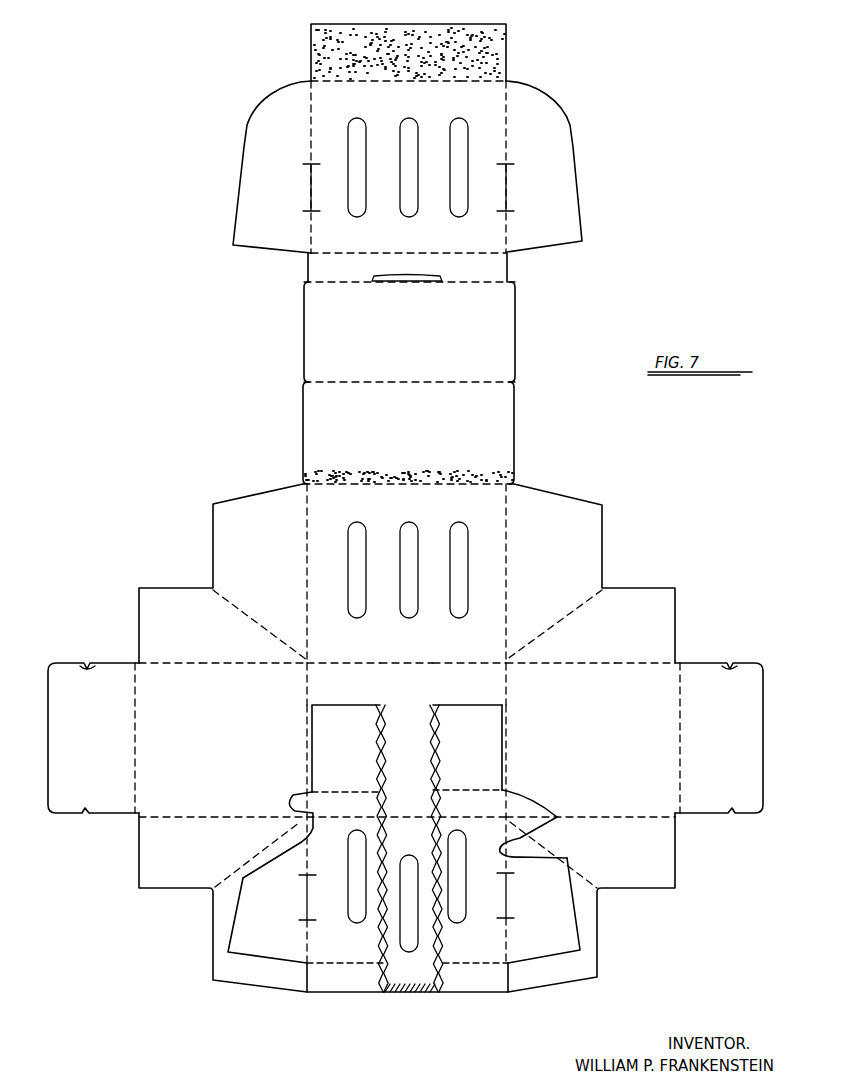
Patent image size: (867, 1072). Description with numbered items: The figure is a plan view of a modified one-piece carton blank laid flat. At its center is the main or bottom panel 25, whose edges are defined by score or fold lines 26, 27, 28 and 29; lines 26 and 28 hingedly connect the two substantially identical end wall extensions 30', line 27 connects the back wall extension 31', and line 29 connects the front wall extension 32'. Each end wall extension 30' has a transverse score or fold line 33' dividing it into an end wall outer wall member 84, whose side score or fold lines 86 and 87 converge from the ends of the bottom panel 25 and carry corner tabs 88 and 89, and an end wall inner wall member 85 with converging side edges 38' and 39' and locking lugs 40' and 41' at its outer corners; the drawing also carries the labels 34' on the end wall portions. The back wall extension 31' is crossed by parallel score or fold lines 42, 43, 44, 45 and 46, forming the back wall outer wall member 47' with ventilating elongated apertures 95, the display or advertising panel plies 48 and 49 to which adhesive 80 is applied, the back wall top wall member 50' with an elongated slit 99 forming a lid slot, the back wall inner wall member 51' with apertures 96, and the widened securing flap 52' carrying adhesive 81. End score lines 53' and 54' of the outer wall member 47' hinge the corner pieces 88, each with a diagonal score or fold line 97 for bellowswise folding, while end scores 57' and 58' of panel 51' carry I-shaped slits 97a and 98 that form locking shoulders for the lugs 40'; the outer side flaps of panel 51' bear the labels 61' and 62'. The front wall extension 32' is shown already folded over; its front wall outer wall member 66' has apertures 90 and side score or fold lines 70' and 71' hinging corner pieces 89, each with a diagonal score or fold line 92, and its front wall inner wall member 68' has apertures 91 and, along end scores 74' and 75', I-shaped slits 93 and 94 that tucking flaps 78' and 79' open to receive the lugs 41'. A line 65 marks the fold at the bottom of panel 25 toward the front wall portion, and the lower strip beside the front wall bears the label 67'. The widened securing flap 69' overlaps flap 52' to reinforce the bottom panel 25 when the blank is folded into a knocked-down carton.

The adhesive 81 is at (318, 43).
The back wall inner wall member securing flap 52' is at (427, 52).
The back wall inner wall member 51' is at (502, 73).
The score or fold line 46 is at (380, 83).
The end score line 57' is at (330, 167).
The end score line 58' is at (523, 167).
The elongated apertures 96 is at (409, 216).
The I-shaped slit 97a is at (311, 200).
The I-shaped slit 98 is at (505, 194).
The score or fold line 45 is at (382, 251).
The end flap 62' is at (560, 166).
The end flap 61' is at (272, 178).
The back wall top wall member 50' is at (429, 267).
The elongated slit 99 is at (429, 277).
The score or fold line 44 is at (350, 283).
The score or fold line 43 is at (468, 380).
The display or advertising panel ply 49 is at (408, 383).
The display or advertising panel ply 48 is at (513, 432).
The adhesive 80 is at (397, 470).
The score or fold line 42 is at (400, 486).
The elongated apertures 95 is at (357, 526).
The end score or fold line 53' is at (325, 573).
The end score or fold line 54' is at (525, 573).
The back wall outer wall member 47' is at (425, 617).
The corner pieces 88 is at (213, 548).
The diagonal score or fold line 97 is at (250, 617).
The end wall outer wall member 84 is at (198, 674).
The score or fold line 86 is at (238, 665).
The end wall inner wall member 85 is at (90, 666).
The locking lug 40' is at (415, 720).
The side edge 38' is at (416, 681).
The transverse score or fold line 33' is at (427, 738).
The side panel 34' is at (502, 738).
The side edge 39' is at (410, 791).
The locking lug 41' is at (428, 828).
The score or fold line 87 is at (208, 825).
The score or fold line 26 is at (309, 681).
The score or fold line 27 is at (394, 665).
The score or fold line 28 is at (506, 681).
The main or bottom panel 25 is at (467, 693).
The score or fold line 29 is at (412, 818).
The fold line 65 is at (463, 790).
The front wall inner wall member securing flap 69' is at (491, 847).
The front wall inner wall member 68' is at (529, 795).
The side score or fold line 70' is at (298, 835).
The side score or fold line 71' is at (533, 837).
The elongated apertures 90 is at (409, 858).
The elongated apertures 91 is at (457, 836).
The I-shaped slit 93 is at (307, 902).
The I-shaped slit 94 is at (506, 902).
The end score or fold line 74' is at (328, 834).
The end score or fold line 75' is at (492, 834).
The diagonal score or fold line 92 is at (230, 880).
The corner pieces 89 is at (152, 890).
The tucking flap 78' is at (267, 944).
The tucking flap 79' is at (574, 910).
The bottom flap 67' is at (345, 991).
The front wall outer wall member 66' is at (409, 863).
The end wall extensions 30' is at (390, 526).
The back wall extension 31' is at (669, 173).
The front wall extension 32' is at (415, 964).